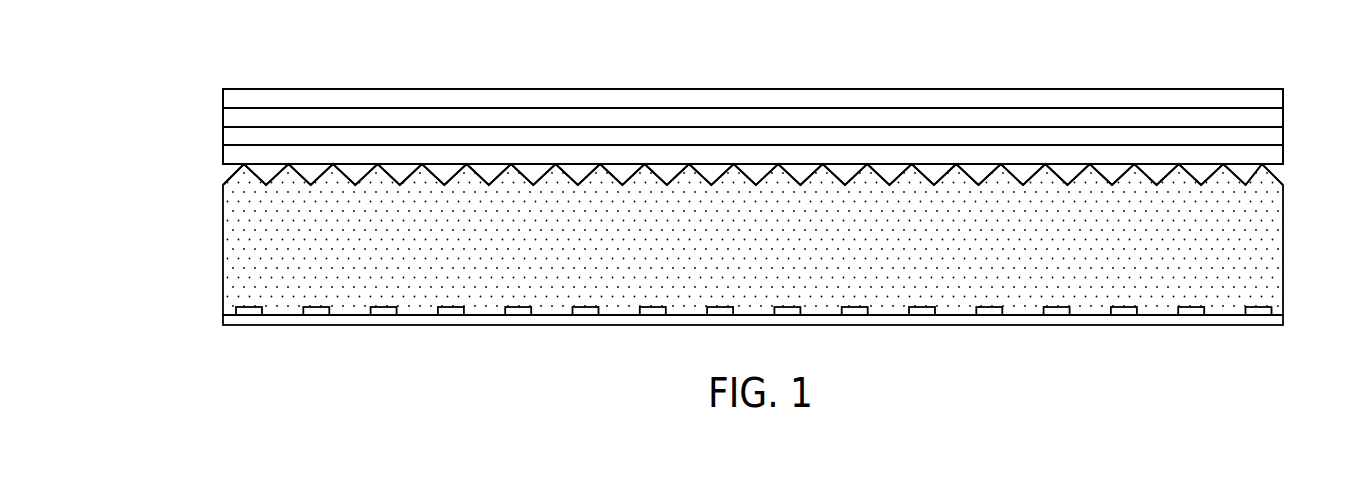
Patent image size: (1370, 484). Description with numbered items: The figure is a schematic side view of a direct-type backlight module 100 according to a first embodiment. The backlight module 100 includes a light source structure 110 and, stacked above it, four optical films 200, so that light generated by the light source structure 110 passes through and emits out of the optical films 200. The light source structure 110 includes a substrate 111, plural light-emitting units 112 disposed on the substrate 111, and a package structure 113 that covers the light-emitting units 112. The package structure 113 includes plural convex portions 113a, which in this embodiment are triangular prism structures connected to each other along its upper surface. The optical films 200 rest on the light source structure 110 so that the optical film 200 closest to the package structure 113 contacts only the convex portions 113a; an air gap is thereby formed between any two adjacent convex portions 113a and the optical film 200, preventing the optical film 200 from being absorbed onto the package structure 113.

The backlight module 100 is at (113, 43).
The optical films 200 is at (210, 89).
The light source structure 110 is at (190, 253).
The substrate 111 is at (350, 323).
The light-emitting units 112 is at (318, 308).
The package structure 113 is at (1267, 249).
The convex portions 113a is at (1220, 178).